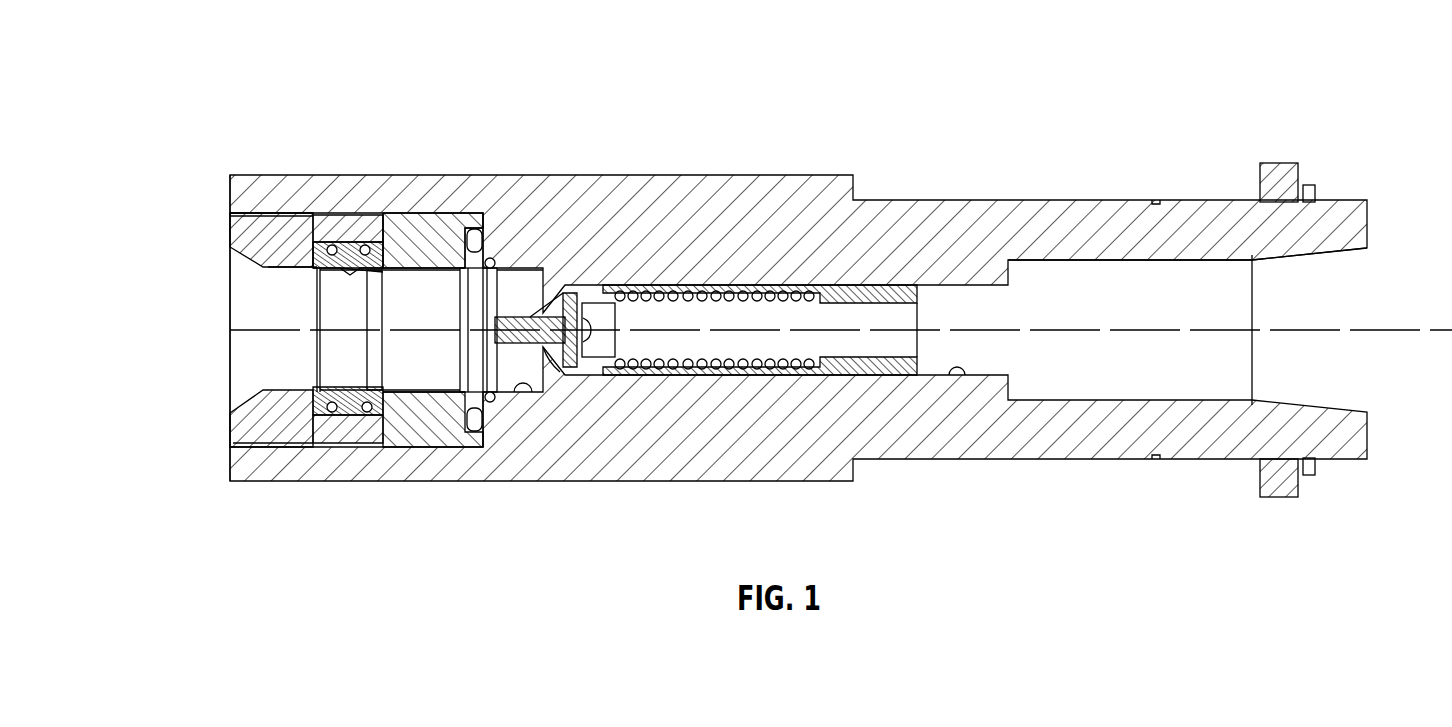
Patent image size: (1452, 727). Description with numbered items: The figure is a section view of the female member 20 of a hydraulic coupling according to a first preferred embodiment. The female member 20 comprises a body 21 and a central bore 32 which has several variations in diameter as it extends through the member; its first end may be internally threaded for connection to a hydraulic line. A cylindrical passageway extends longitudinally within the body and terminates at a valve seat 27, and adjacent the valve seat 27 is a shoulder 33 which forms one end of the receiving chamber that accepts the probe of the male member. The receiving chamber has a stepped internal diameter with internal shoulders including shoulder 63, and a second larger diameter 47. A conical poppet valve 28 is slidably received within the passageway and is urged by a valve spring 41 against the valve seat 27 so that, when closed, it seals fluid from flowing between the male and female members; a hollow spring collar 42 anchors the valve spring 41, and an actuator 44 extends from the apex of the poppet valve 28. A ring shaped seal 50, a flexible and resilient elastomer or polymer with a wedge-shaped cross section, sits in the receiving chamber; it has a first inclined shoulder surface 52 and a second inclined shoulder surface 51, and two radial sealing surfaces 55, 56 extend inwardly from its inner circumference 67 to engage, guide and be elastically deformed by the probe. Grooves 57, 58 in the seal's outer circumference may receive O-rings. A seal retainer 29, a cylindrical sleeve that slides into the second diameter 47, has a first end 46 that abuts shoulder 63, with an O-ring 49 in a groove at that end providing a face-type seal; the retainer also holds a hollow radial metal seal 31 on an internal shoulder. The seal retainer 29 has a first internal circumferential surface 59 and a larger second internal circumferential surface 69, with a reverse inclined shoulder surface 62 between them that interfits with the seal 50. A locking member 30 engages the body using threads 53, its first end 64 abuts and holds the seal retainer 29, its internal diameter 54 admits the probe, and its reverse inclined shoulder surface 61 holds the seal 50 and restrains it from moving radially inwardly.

The female member 20 is at (670, 148).
The body 21 is at (798, 308).
The valve seat 27 is at (713, 401).
The poppet valve 28 is at (572, 243).
The seal retainer 29 is at (422, 406).
The locking member 30 is at (236, 343).
The hollow radial metal seal 31 is at (522, 241).
The central bore 32 is at (1000, 426).
The shoulder 33 is at (622, 415).
The valve spring 41 is at (760, 259).
The hollow spring collar 42 is at (1144, 275).
The actuator 44 is at (571, 248).
The first end 46 is at (891, 331).
The second larger diameter 47 is at (439, 240).
The O-ring 49 is at (567, 466).
The ring shaped seal 50 is at (301, 243).
The second inclined shoulder surface 51 is at (249, 262).
The first inclined shoulder surface 52 is at (434, 255).
The threads 53 is at (340, 371).
The internal diameter 54 is at (237, 327).
The radial sealing surface 55 is at (280, 282).
The radial sealing surface 56 is at (280, 328).
The groove 57 is at (359, 398).
The groove 58 is at (453, 378).
The first internal circumferential surface 59 is at (471, 191).
The reverse inclined shoulder surface 61 is at (229, 192).
The reverse inclined shoulder surface 62 is at (352, 192).
The shoulder 63 is at (531, 165).
The first end 64 is at (245, 186).
The inner circumference 67 is at (270, 330).
The second internal circumferential surface 69 is at (257, 243).